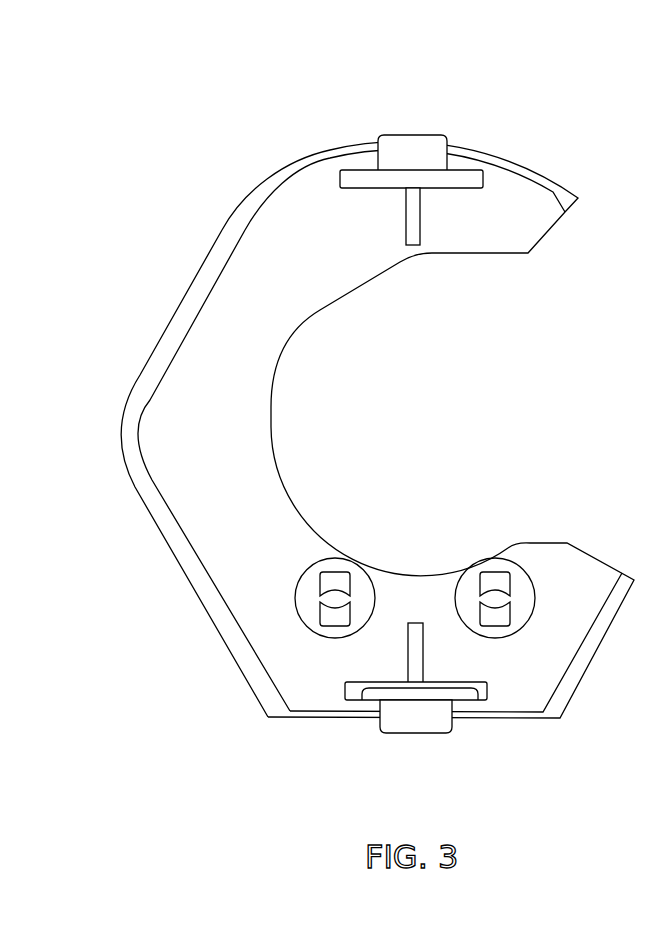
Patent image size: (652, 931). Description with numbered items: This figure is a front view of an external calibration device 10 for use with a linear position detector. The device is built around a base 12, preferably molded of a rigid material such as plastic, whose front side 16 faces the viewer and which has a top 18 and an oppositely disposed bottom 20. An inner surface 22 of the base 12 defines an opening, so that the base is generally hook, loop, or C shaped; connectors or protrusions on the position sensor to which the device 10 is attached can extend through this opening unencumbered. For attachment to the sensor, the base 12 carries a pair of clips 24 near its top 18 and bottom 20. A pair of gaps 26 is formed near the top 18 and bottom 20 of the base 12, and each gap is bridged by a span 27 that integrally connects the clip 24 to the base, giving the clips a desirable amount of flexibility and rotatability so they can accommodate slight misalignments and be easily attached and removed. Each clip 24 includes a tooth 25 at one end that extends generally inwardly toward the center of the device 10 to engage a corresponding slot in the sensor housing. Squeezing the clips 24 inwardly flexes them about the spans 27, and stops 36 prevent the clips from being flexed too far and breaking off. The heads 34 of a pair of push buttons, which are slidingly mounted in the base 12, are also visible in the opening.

The external calibration device 10 is at (349, 422).
The base 12 is at (349, 437).
The front side 16 is at (190, 505).
The top 18 is at (476, 151).
The bottom 20 is at (322, 718).
The inner surface 22 is at (389, 414).
The clip 24 is at (405, 135).
The tooth 25 is at (430, 688).
The gap 26 is at (450, 188).
The span 27 is at (372, 155).
The head 34 is at (302, 584).
The stop 36 is at (406, 220).